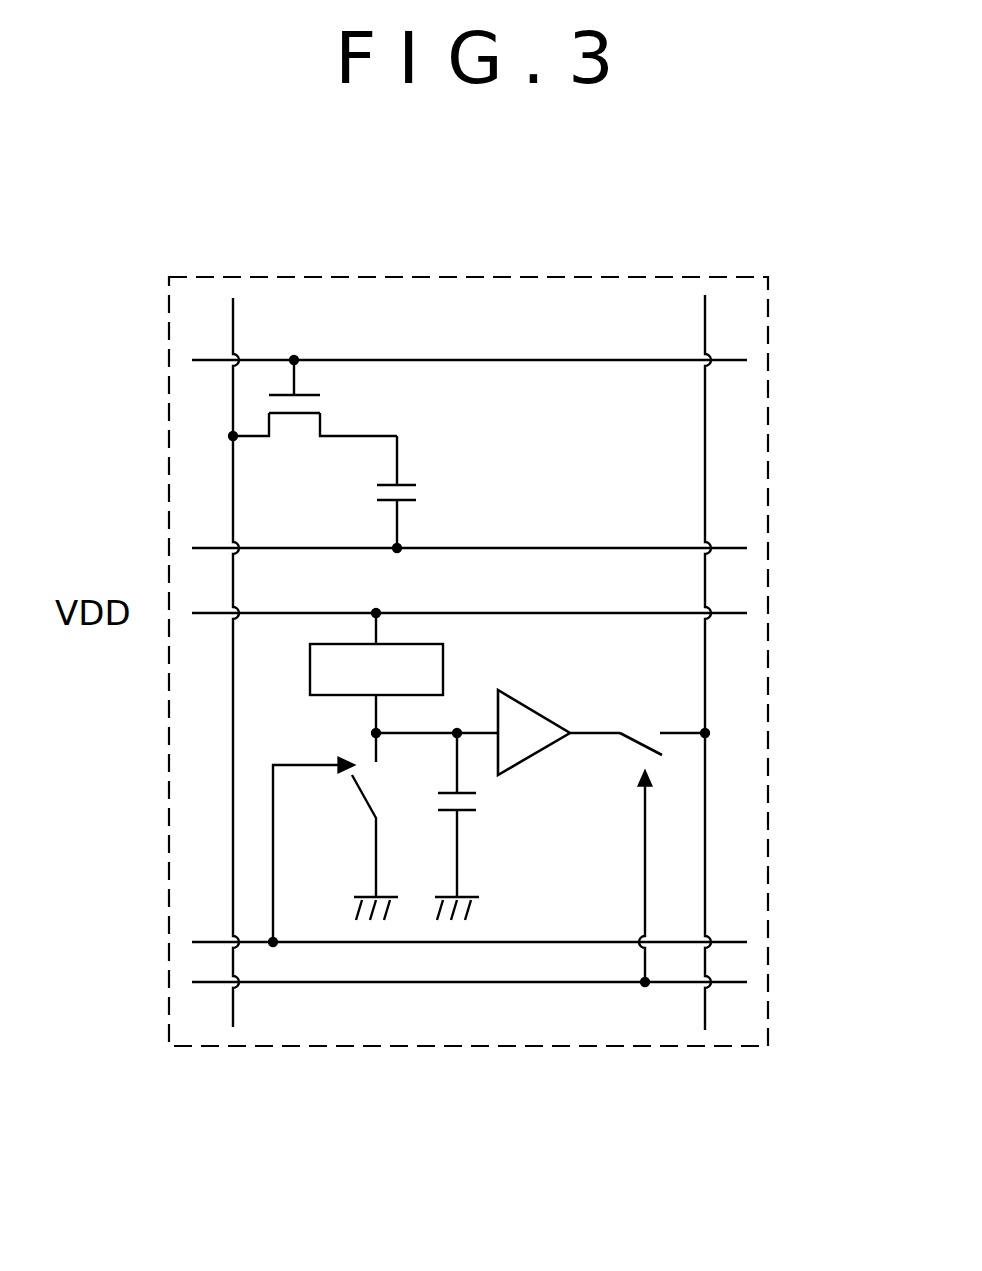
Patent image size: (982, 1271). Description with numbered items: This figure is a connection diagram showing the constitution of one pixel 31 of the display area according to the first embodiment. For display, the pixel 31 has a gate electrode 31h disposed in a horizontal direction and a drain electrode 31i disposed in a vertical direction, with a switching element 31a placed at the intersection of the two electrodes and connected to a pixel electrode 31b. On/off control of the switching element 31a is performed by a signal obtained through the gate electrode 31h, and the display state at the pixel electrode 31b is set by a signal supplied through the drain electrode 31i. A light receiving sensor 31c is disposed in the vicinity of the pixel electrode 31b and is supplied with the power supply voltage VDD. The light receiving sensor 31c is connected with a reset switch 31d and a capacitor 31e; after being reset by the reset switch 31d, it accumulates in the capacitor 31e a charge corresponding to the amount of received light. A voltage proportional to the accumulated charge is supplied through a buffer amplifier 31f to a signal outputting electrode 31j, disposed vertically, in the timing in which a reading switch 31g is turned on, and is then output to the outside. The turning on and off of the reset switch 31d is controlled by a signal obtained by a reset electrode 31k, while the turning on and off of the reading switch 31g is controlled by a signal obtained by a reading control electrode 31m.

The pixel 31 is at (452, 277).
The switching element 31a is at (298, 428).
The pixel electrode 31b is at (420, 493).
The light receiving sensor 31c is at (443, 670).
The reset switch 31d is at (365, 765).
The capacitor 31e is at (480, 803).
The buffer amplifier 31f is at (545, 752).
The reading switch 31g is at (650, 728).
The gate electrode 31h is at (212, 360).
The drain electrode 31i is at (233, 323).
The signal outputting electrode 31j is at (705, 437).
The reset electrode 31k is at (210, 942).
The reading control electrode 31m is at (443, 985).